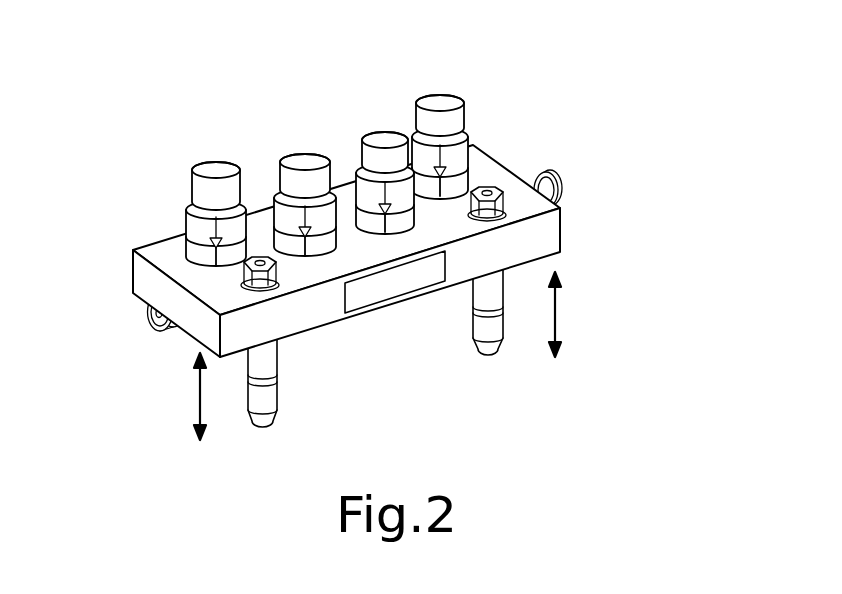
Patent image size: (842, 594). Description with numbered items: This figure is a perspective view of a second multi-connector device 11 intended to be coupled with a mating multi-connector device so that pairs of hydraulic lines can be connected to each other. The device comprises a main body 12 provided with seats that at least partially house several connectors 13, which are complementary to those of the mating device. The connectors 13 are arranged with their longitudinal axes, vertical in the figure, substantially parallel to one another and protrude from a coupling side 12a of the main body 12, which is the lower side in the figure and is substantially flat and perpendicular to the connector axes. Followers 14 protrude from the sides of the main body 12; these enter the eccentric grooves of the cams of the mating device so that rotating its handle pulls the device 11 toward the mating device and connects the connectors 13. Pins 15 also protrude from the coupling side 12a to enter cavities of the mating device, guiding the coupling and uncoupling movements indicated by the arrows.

The second multi-connector device 11 is at (155, 140).
The main body 12 is at (540, 236).
The coupling side 12a is at (353, 345).
The connectors 13 is at (208, 167).
The followers 14 is at (551, 187).
The pins 15 is at (270, 383).